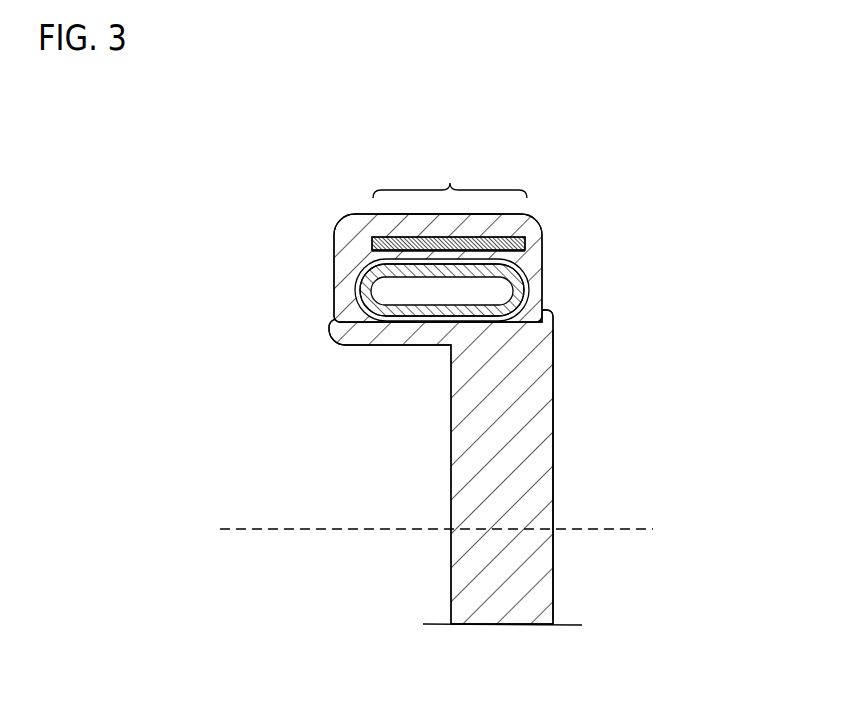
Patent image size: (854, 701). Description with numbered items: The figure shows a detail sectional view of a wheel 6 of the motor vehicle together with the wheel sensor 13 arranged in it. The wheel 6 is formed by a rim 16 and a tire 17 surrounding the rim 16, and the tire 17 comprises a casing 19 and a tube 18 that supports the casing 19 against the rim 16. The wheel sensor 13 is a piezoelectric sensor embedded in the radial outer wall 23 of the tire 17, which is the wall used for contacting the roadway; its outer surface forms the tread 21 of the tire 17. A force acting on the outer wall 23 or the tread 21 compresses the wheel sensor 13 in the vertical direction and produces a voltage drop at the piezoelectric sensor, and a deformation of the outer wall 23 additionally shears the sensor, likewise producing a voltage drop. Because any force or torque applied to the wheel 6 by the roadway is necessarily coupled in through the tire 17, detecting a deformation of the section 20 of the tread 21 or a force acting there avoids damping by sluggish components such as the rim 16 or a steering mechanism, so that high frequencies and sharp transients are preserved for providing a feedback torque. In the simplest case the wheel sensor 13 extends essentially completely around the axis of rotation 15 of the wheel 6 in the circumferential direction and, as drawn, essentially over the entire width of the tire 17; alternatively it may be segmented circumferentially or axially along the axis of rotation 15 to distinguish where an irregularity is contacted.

The wheel 6 is at (602, 452).
The wheel sensor 13 is at (524, 243).
The axis of rotation 15 is at (330, 528).
The rim 16 is at (554, 505).
The tire 17 is at (546, 284).
The tube 18 is at (536, 306).
The casing 19 is at (541, 262).
The section of the tread 20 is at (450, 174).
The tread 21 is at (431, 162).
The radial outer wall 23 is at (380, 250).